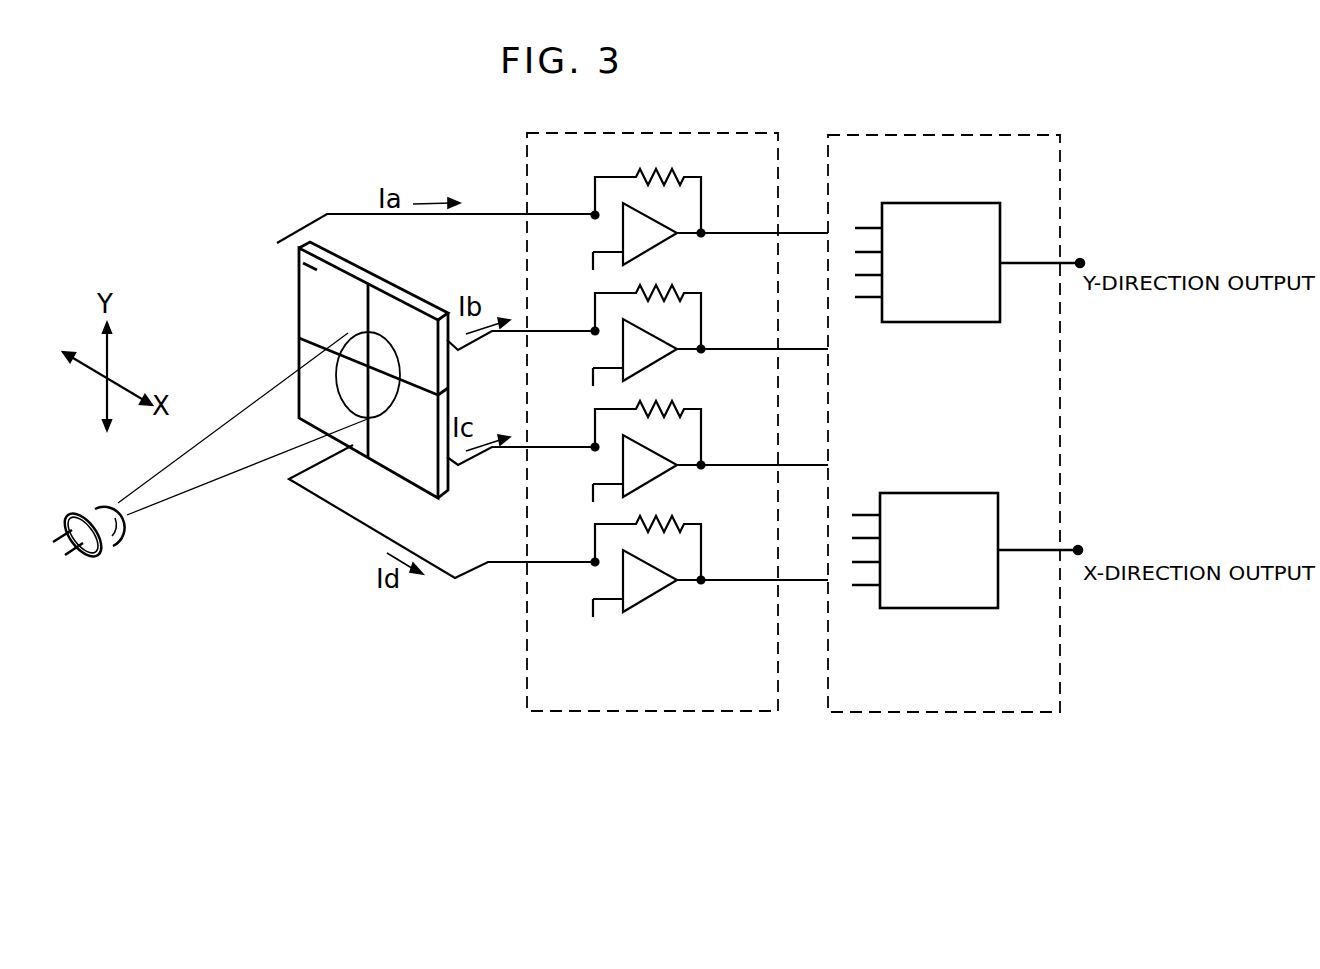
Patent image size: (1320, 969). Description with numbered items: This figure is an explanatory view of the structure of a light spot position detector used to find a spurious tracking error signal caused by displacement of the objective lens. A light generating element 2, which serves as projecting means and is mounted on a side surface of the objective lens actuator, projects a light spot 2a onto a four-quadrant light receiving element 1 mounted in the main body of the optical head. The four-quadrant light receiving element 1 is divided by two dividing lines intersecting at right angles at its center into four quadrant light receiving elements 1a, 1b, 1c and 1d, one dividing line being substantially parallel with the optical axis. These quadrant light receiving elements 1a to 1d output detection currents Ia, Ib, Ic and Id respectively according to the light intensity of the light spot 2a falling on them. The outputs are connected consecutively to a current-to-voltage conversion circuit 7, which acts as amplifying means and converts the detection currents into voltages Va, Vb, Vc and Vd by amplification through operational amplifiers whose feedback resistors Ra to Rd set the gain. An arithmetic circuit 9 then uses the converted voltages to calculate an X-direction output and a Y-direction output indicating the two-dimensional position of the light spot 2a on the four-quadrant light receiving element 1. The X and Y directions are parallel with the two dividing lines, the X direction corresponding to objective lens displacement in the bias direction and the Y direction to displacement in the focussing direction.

The four-quadrant light receiving element 1 is at (337, 381).
The quadrant light receiving element 1a is at (348, 298).
The quadrant light receiving element 1b is at (400, 323).
The quadrant light receiving element 1c is at (392, 463).
The quadrant light receiving element 1d is at (307, 353).
The light generating element 2 is at (114, 540).
The light spot 2a is at (347, 337).
The current-to-voltage conversion circuit 7 is at (617, 713).
The arithmetic circuit 9 is at (908, 713).